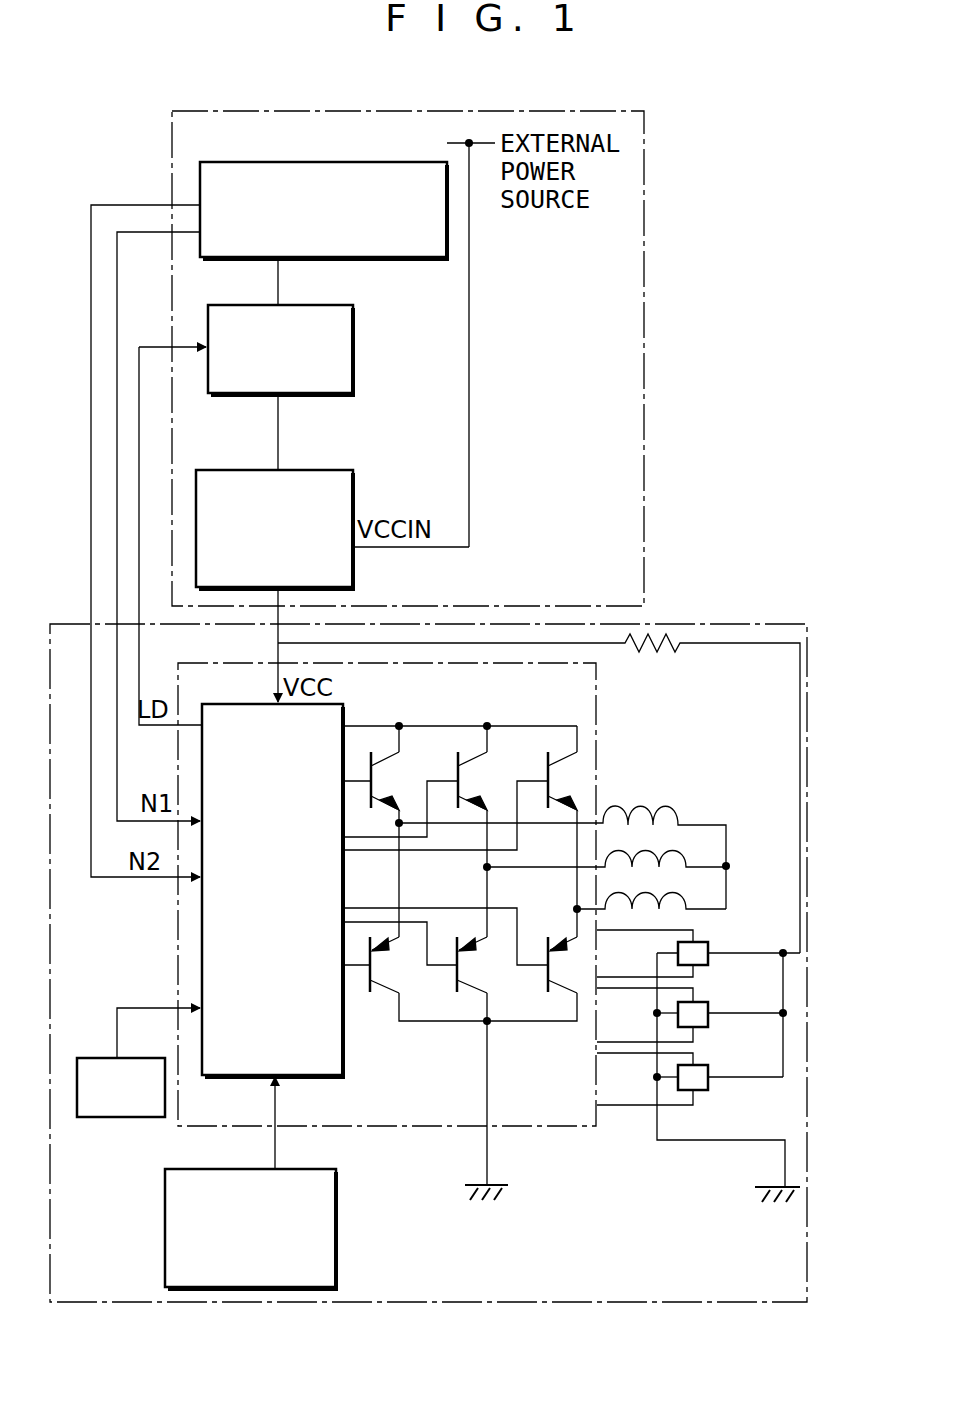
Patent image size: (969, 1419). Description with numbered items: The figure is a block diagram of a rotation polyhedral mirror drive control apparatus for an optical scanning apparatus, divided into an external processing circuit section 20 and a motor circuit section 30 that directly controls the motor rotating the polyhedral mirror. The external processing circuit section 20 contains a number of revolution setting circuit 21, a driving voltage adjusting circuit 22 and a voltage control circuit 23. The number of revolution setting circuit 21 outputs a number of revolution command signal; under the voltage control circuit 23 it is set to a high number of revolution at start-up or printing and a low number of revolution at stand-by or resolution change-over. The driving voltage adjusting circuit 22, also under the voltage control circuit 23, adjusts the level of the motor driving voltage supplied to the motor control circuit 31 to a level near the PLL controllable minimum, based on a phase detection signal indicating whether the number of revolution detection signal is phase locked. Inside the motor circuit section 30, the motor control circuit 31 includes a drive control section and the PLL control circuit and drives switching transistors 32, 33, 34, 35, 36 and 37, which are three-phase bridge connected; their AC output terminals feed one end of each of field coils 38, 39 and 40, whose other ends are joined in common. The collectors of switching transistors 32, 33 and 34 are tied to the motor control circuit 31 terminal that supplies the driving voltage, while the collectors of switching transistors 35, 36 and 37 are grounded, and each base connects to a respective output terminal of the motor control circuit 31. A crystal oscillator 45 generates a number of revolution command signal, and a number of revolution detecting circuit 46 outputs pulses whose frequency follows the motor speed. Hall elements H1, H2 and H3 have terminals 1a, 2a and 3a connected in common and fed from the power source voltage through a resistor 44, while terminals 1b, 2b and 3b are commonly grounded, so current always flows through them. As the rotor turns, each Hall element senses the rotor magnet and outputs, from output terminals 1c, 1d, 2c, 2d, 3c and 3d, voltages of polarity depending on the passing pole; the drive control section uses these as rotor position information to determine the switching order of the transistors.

The external processing circuit section 20 is at (645, 303).
The number of revolution setting circuit 21 is at (378, 162).
The driving voltage adjusting circuit 22 is at (332, 470).
The voltage control circuit 23 is at (353, 346).
The motor circuit section 30 is at (672, 625).
The motor control circuit 31 is at (333, 706).
The switching transistor 32 is at (386, 782).
The switching transistor 33 is at (515, 777).
The switching transistor 34 is at (572, 777).
The switching transistor 35 is at (388, 968).
The switching transistor 36 is at (475, 968).
The switching transistor 37 is at (567, 970).
The field coil 38 is at (655, 802).
The field coil 39 is at (660, 850).
The field coil 40 is at (660, 893).
The resistor 44 is at (655, 648).
The crystal oscillator 45 is at (95, 1058).
The number of revolution detecting circuit 46 is at (336, 1225).
The Hall element H1 is at (708, 950).
The Hall element H2 is at (710, 1023).
The Hall element H3 is at (700, 1090).
The Hall element terminal 1a is at (710, 958).
The Hall element terminal 1b is at (678, 950).
The output terminal 1c is at (693, 940).
The output terminal 1d is at (700, 967).
The Hall element terminal 2a is at (710, 1018).
The Hall element terminal 2b is at (675, 1010).
The output terminal 2c is at (700, 995).
The output terminal 2d is at (678, 1040).
The Hall element terminal 3a is at (710, 1082).
The Hall element terminal 3b is at (668, 1080).
The output terminal 3c is at (678, 1060).
The output terminal 3d is at (692, 1092).